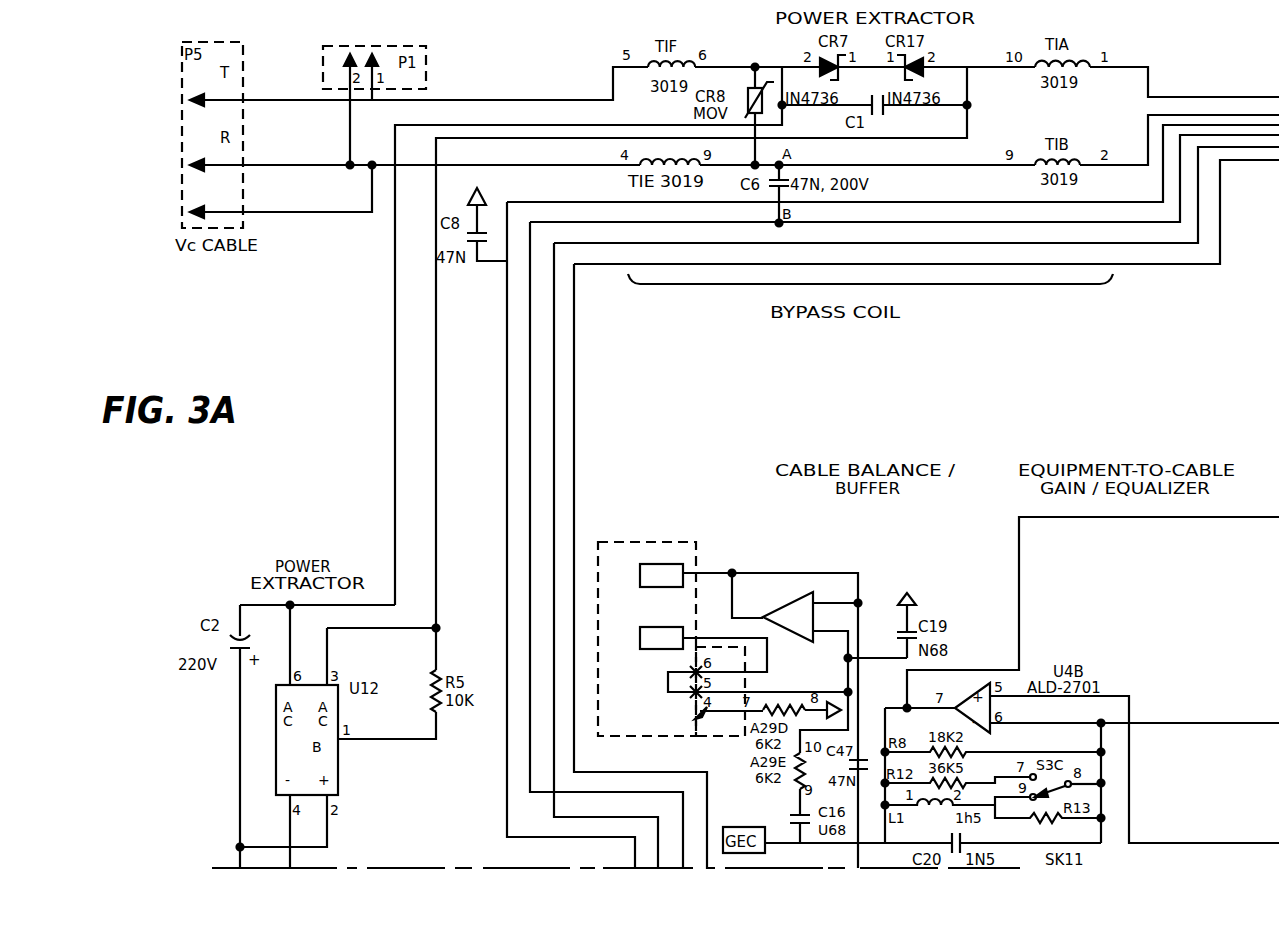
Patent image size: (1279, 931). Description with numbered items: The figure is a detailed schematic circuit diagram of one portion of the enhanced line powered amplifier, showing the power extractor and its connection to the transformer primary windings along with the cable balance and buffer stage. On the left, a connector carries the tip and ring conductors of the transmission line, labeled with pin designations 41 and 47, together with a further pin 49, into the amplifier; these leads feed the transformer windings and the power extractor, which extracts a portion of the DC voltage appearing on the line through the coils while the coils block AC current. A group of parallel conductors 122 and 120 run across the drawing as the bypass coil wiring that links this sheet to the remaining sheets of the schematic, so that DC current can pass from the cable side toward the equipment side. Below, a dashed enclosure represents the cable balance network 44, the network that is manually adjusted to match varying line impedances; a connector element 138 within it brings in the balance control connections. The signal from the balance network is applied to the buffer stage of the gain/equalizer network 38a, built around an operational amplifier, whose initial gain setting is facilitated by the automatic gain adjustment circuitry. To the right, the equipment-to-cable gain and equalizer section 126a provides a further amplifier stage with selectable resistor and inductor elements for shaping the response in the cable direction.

The tip lead 41 is at (419, 86).
The ring lead 47 is at (415, 160).
The ground lead 49 is at (281, 191).
The bypass coil line 122 is at (952, 204).
The bypass coil line 120 is at (952, 225).
The cable balance network 44 is at (625, 541).
The cable balance switch 138 is at (668, 563).
The gain/equalizer network 38a is at (906, 531).
The equipment-to-cable gain equalizer 126a is at (1019, 620).